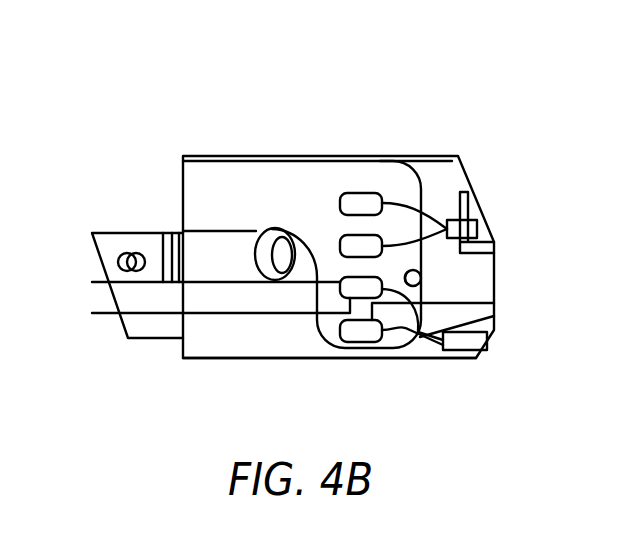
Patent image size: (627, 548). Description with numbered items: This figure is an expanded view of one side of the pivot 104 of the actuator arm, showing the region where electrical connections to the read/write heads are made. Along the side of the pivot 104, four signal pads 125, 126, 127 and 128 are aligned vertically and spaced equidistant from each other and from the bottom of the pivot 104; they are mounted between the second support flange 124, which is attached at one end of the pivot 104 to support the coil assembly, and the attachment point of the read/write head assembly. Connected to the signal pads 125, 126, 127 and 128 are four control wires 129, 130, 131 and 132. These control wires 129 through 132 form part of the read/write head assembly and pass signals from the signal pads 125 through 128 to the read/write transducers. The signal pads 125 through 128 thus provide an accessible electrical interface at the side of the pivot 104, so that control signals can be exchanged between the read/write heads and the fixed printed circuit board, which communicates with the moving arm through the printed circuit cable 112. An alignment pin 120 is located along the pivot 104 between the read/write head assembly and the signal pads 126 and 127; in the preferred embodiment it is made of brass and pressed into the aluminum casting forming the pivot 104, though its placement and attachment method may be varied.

The pivot 104 is at (225, 358).
The printed circuit cable 112 is at (238, 177).
The alignment pin 120 is at (420, 271).
The second support flange 124 is at (180, 300).
The signal pad 125 is at (367, 193).
The signal pad 126 is at (341, 236).
The signal pad 127 is at (378, 304).
The signal pad 128 is at (363, 343).
The control wire 129 is at (398, 200).
The control wire 130 is at (412, 228).
The control wire 131 is at (420, 336).
The control wire 132 is at (452, 349).